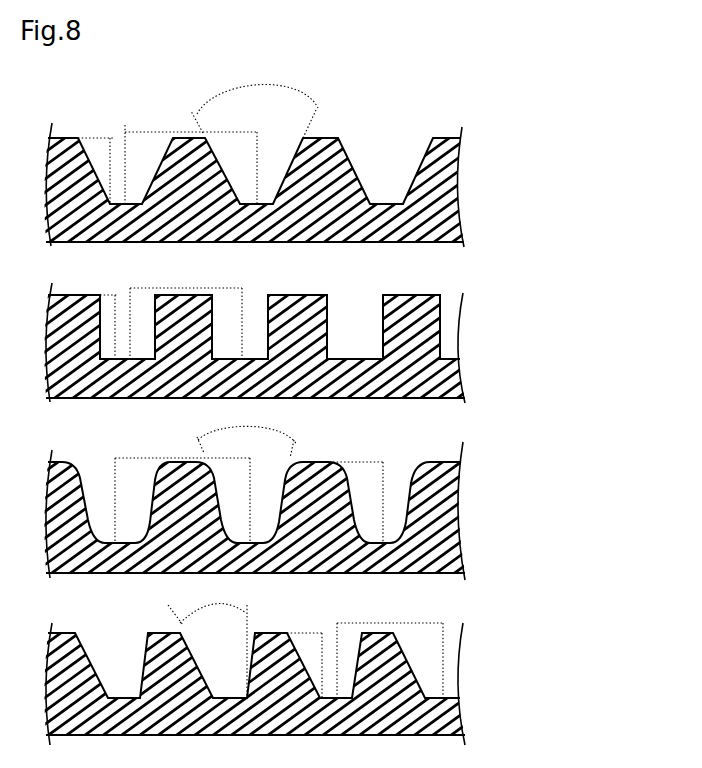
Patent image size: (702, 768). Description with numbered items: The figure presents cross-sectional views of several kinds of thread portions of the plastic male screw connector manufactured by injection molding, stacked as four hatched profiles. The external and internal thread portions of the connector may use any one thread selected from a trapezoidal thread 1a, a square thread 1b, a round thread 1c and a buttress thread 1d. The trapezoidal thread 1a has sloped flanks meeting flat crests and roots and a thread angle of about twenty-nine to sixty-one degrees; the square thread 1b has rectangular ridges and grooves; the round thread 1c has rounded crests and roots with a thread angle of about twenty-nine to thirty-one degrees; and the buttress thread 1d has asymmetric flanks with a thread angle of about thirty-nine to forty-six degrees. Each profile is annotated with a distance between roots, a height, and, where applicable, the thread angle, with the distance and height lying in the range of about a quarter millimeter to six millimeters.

The trapezoidal thread 1a is at (462, 190).
The square thread 1b is at (462, 350).
The round thread 1c is at (462, 507).
The buttress thread 1d is at (463, 673).